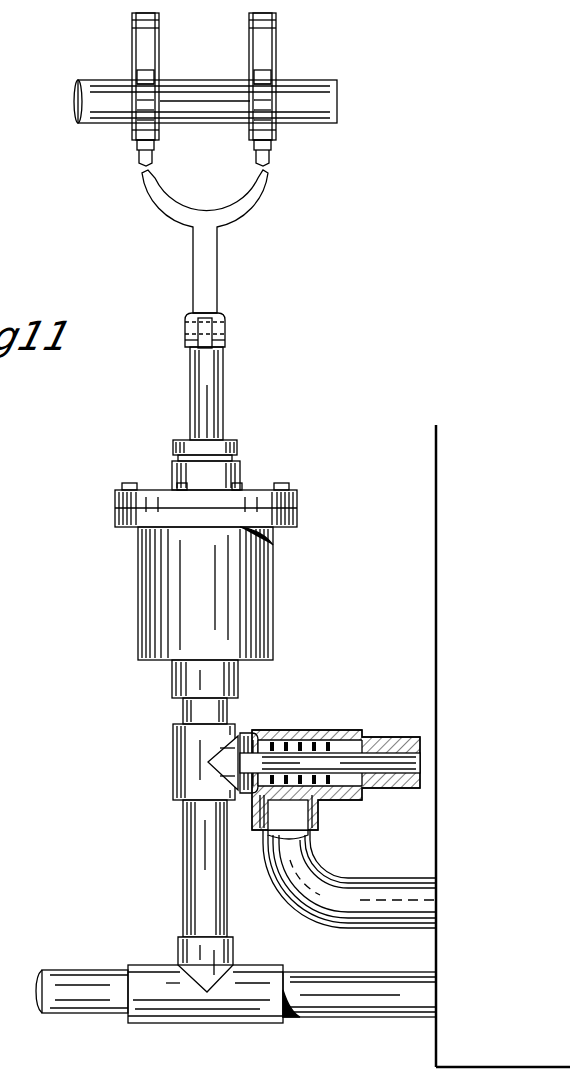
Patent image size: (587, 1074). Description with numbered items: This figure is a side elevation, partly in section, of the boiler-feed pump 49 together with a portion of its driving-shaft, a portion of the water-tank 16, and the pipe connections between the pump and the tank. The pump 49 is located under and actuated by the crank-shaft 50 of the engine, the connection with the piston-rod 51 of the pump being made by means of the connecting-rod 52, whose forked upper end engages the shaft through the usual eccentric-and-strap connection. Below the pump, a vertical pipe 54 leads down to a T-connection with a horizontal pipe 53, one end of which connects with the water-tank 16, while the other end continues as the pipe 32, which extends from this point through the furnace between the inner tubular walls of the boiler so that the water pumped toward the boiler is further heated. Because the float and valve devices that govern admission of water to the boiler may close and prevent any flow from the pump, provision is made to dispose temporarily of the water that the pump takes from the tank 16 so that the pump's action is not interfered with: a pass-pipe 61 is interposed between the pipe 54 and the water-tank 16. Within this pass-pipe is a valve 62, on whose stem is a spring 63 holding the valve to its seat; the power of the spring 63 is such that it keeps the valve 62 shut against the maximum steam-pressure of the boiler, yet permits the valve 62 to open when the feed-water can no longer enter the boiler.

The water-tank 16 is at (503, 746).
The pipe 32 is at (76, 972).
The boiler-feed pump 49 is at (206, 582).
The crank-shaft 50 is at (210, 123).
The piston-rod 51 is at (189, 395).
The connecting-rod 52 is at (190, 264).
The pipe 53 is at (360, 974).
The vertical pipe 54 is at (182, 890).
The pass-pipe 61 is at (389, 878).
The valve 62 is at (330, 763).
The spring 63 is at (305, 740).